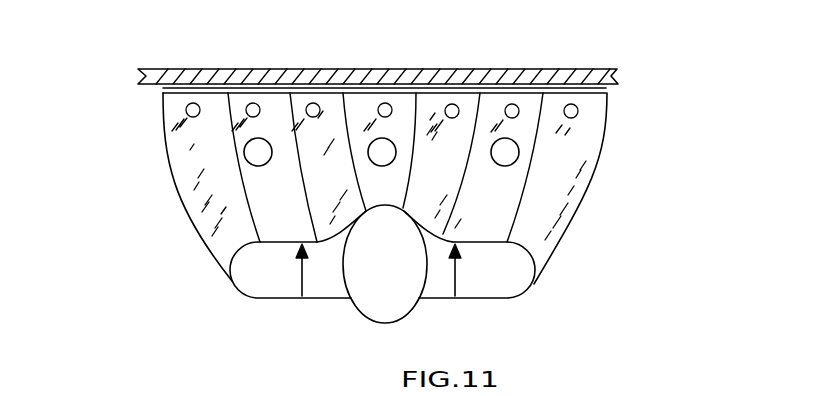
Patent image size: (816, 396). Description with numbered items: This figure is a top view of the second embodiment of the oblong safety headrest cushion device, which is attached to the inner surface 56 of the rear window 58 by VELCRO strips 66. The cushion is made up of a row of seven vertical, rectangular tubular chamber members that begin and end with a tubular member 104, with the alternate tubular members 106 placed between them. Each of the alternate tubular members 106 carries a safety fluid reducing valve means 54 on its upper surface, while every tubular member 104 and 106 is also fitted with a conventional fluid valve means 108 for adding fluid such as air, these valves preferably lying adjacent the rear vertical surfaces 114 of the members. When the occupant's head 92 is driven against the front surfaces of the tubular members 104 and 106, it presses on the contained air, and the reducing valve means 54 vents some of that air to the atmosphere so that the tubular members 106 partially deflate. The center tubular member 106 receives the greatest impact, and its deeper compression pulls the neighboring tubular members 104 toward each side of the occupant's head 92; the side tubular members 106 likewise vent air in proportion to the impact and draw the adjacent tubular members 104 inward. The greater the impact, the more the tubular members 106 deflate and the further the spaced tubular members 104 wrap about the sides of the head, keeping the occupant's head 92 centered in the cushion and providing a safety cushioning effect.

The safety fluid reducing valve means 54 is at (267, 164).
The inner surface 56 is at (160, 85).
The rear window 58 is at (238, 68).
The VELCRO strips 66 is at (604, 88).
The occupant's head 92 is at (371, 273).
The tubular chamber member 104 is at (203, 163).
The tubular chamber member 106 is at (270, 117).
The fluid valve means 108 is at (577, 116).
The rear vertical surface 114 is at (334, 99).